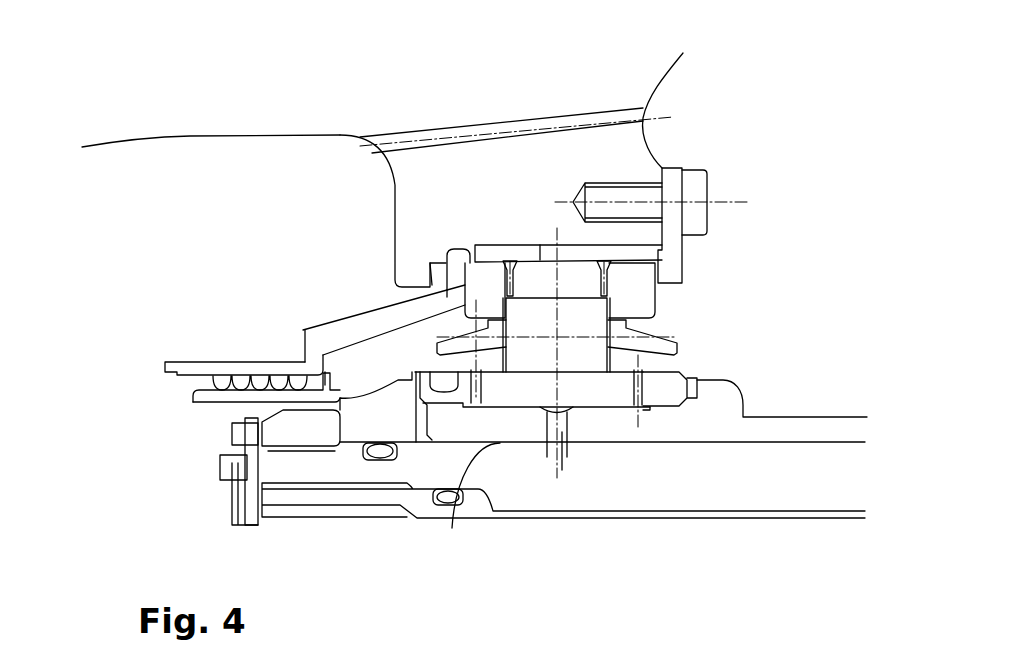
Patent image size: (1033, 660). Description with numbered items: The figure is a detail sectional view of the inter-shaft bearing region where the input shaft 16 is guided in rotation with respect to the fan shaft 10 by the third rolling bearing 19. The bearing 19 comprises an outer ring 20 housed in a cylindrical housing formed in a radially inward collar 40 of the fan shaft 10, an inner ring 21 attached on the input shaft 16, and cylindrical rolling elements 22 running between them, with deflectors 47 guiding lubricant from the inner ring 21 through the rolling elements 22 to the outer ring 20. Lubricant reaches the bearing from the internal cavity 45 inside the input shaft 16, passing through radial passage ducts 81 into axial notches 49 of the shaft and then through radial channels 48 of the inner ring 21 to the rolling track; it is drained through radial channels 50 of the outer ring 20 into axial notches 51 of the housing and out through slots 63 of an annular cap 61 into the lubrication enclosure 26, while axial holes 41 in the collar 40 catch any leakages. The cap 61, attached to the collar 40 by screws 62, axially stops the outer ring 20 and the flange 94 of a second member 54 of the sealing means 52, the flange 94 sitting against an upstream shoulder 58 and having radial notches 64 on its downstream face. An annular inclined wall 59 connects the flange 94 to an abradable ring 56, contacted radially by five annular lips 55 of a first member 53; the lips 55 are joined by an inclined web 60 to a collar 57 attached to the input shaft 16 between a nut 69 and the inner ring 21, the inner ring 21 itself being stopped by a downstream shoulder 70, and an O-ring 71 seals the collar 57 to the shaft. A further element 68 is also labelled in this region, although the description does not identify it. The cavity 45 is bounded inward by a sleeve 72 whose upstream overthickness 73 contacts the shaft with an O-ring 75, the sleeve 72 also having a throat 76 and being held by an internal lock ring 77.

The fan shaft 10 is at (192, 136).
The input shaft 16 is at (793, 415).
The third rolling bearing 19 is at (678, 308).
The outer ring 20 is at (645, 295).
The inner ring 21 is at (508, 390).
The rolling elements 22 is at (587, 358).
The lubrication enclosure 26 is at (824, 204).
The collar 40 is at (413, 200).
The axial holes 41 is at (447, 137).
The internal cavity 45 is at (788, 489).
The deflectors 47 is at (647, 332).
The lubricant channels 48 is at (477, 408).
The axial notches 49 is at (593, 410).
The lubricant channels 50 is at (482, 262).
The axial notches 51 is at (540, 252).
The sealing means 52 is at (141, 363).
The first member 53 is at (210, 408).
The second member 54 is at (300, 332).
The annular lips 55 is at (212, 380).
The abradable ring 56 is at (210, 370).
The collar 57 is at (373, 420).
The upstream shoulder 58 is at (427, 275).
The annular inclined wall 59 is at (388, 300).
The annular inclined web 60 is at (337, 398).
The annular cap 61 is at (673, 160).
The screws 62 is at (690, 192).
The slots 63 is at (672, 252).
The radial notches 64 is at (400, 313).
The washer 68 is at (667, 410).
The nut 69 is at (297, 423).
The downstream shoulder 70 is at (693, 393).
The O-ring 71 is at (378, 460).
The sleeve 72 is at (766, 520).
The upstream overthickness 73 is at (476, 498).
The O-rings 75 is at (448, 505).
The throat 76 is at (253, 472).
The internal lock ring 77 is at (232, 505).
The lubricant passage ducts 81 is at (560, 433).
The flange 94 is at (440, 273).